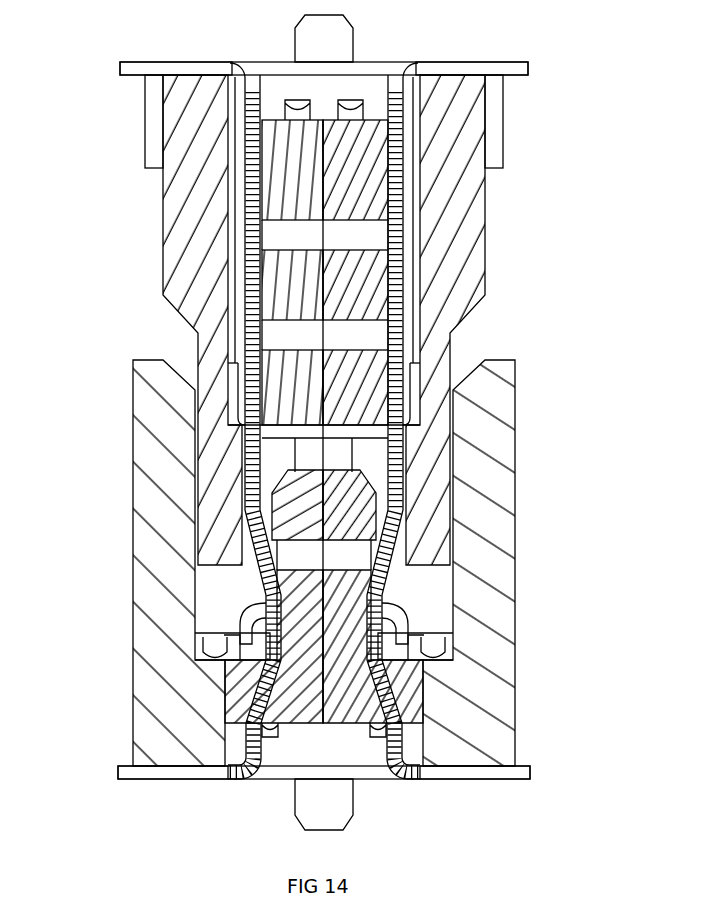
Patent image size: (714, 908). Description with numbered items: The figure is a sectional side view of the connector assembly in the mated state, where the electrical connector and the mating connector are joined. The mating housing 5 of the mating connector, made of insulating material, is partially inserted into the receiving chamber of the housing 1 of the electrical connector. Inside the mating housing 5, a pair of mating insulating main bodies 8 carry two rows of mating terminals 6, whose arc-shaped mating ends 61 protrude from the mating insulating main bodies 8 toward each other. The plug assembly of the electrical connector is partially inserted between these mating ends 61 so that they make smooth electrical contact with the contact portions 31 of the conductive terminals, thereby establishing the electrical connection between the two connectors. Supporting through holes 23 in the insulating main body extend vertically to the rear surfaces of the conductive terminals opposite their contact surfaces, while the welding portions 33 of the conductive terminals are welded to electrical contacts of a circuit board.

The housing 1 is at (167, 573).
The mating housing 5 is at (476, 212).
The mating terminals 6 is at (200, 68).
The mating insulating main bodies 8 is at (283, 300).
The supporting through holes 23 is at (272, 533).
The contact portion 31 is at (385, 612).
The welding portion 33 is at (145, 775).
The mating ends 61 is at (380, 582).